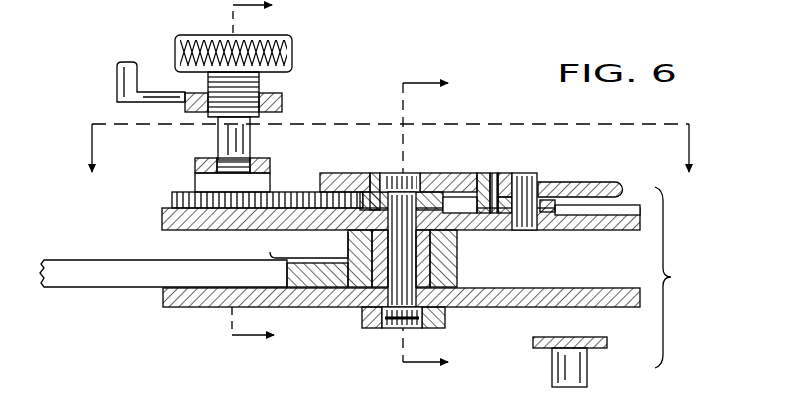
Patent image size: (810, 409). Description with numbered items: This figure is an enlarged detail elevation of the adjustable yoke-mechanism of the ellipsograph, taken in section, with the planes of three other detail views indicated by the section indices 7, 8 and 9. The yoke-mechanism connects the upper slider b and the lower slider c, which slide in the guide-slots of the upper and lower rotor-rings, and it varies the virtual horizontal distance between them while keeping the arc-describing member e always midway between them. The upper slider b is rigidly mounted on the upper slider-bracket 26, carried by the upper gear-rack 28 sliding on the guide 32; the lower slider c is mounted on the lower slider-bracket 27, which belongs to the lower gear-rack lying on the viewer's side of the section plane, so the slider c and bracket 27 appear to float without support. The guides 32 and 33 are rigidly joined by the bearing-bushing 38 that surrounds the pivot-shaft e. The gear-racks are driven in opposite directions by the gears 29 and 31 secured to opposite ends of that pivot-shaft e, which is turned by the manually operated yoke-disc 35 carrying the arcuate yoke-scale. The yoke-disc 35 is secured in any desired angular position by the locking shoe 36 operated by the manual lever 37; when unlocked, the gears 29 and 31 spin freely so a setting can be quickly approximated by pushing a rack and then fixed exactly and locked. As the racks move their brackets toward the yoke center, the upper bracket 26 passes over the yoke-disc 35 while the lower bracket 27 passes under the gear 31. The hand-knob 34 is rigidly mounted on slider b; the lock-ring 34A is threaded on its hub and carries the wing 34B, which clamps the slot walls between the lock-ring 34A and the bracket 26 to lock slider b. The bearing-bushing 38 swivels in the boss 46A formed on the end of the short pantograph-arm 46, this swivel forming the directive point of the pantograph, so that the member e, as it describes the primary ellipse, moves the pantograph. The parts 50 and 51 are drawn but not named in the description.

The section plane 7— 7 is at (390, 167).
The section plane 8— 8 is at (438, 227).
The section plane 9— 9 is at (264, 174).
The upper slider-bracket 26 is at (265, 160).
The lower slider-bracket 27 is at (607, 343).
The upper gear-rack 28 is at (186, 192).
The gear 29 is at (376, 180).
The gear 31 is at (362, 316).
The upper guide 32 is at (590, 232).
The lower guide 33 is at (163, 300).
The hand-knob 34 is at (293, 65).
The lock-ring 34A is at (283, 102).
The wing 34B is at (117, 78).
The yoke-disc 35 is at (323, 178).
The locking shoe 36 is at (481, 173).
The manual lever 37 is at (581, 183).
The bearing-bushing 38 is at (456, 250).
The short pantograph-arm 46 is at (113, 260).
The boss 46A is at (457, 260).
The spindle head 50 is at (416, 173).
The nut 51 is at (386, 330).
The upper slider b is at (218, 146).
The lower slider c is at (588, 372).
The arc-describing member e is at (457, 270).